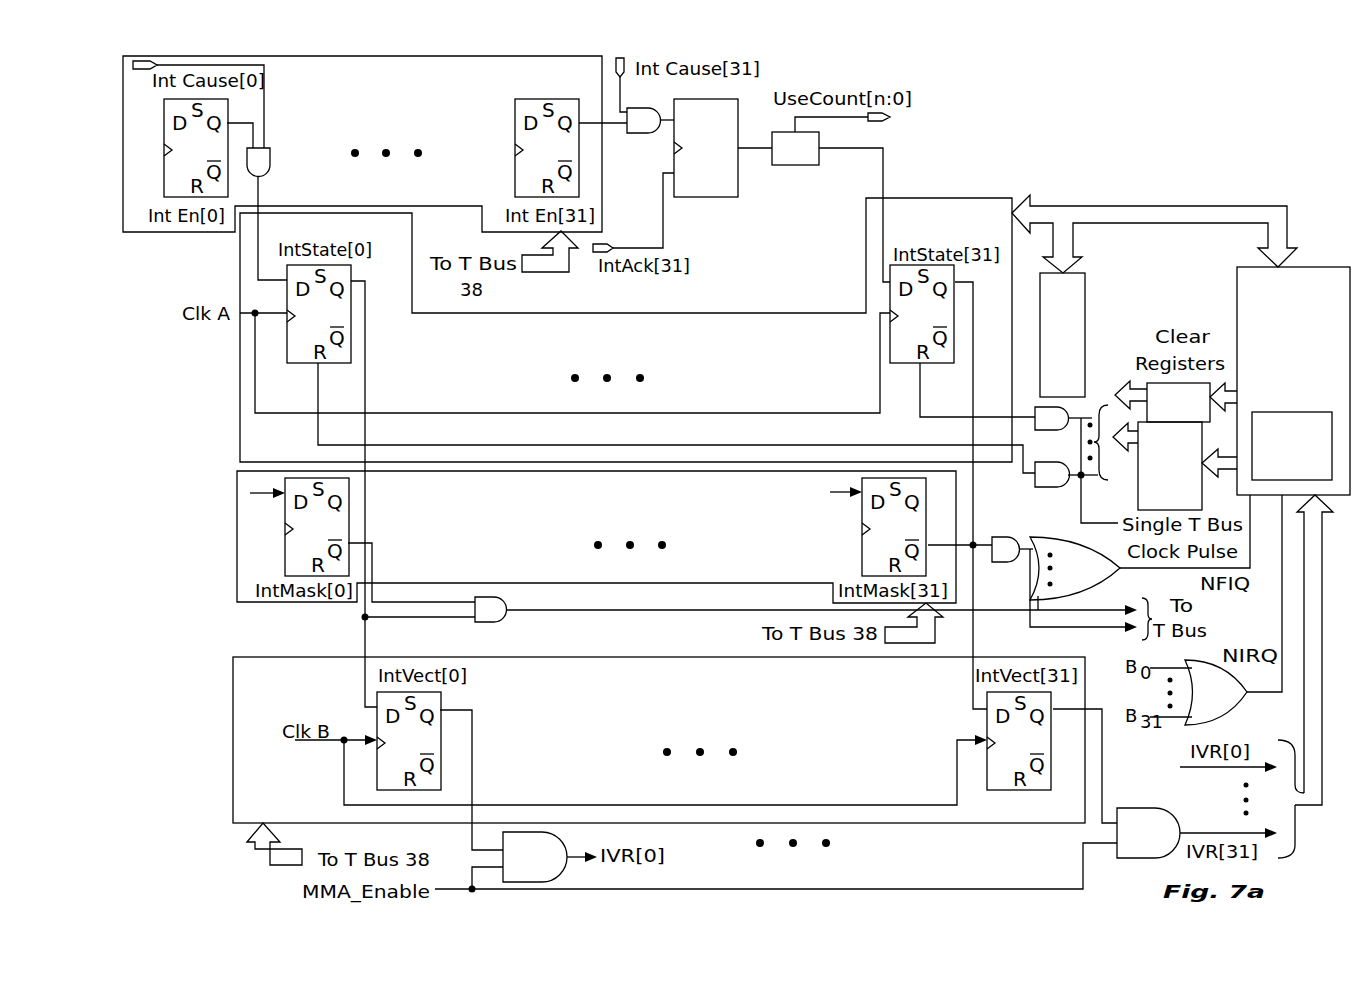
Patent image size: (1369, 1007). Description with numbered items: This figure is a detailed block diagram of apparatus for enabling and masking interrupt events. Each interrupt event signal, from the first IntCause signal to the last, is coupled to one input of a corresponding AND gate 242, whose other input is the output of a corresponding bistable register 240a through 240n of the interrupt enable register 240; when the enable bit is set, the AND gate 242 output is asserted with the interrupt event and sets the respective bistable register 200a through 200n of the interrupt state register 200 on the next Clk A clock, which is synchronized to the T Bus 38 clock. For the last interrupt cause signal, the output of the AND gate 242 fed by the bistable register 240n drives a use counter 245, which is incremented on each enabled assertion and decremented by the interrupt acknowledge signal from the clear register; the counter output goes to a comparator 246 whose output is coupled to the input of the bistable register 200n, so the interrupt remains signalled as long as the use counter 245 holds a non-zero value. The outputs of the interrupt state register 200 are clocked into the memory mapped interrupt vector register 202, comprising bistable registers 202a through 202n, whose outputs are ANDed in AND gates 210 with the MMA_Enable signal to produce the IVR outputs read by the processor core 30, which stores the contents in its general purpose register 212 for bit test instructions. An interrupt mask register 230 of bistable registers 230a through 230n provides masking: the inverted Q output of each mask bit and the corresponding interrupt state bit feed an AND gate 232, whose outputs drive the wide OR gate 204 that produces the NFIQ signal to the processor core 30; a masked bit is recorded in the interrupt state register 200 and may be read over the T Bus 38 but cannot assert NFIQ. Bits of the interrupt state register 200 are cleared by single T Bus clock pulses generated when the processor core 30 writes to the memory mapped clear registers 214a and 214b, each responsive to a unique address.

The interrupt enable register 240 is at (371, 138).
The interrupt enable bistable register 240a is at (220, 153).
The interrupt enable bistable register 240n is at (524, 153).
The AND gate 242 is at (270, 152).
The use counter 245 is at (690, 197).
The comparator 246 is at (785, 165).
The interrupt state register 200 is at (594, 363).
The bistable register 200a is at (343, 319).
The bistable register 200n is at (946, 319).
The T Bus 38 is at (1085, 300).
The processor core 30 is at (1282, 365).
The general purpose register 212 is at (1278, 471).
The clear register 214a is at (1146, 475).
The clear register 214b is at (1155, 410).
The interrupt mask register 230 is at (612, 526).
The bistable register 230a is at (341, 532).
The bistable register 230n is at (918, 532).
The AND gate 232 is at (505, 619).
The wide OR gate 204 is at (1077, 578).
The interrupt vector register 202 is at (683, 719).
The bistable register 202a is at (433, 746).
The bistable register 202n is at (1043, 746).
The AND gate 210 is at (520, 865).